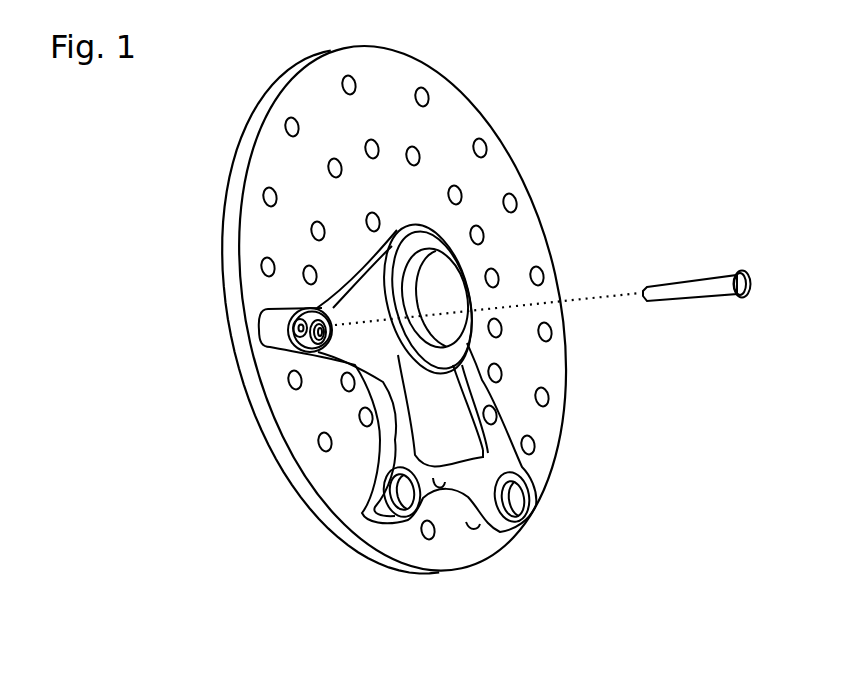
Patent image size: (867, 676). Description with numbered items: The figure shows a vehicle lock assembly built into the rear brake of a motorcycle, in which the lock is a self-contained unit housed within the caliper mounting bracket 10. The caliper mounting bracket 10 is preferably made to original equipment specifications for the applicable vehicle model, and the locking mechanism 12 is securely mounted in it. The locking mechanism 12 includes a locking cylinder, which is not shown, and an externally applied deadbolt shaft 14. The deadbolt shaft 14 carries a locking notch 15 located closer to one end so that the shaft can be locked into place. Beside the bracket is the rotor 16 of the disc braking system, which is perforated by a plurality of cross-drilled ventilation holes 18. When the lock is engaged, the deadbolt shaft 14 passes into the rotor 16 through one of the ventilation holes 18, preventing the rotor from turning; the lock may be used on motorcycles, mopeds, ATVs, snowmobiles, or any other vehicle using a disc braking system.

The caliper mounting bracket 10 is at (456, 447).
The locking mechanism 12 is at (303, 341).
The deadbolt shaft 14 is at (687, 290).
The locking notch 15 is at (728, 280).
The rotor 16 is at (395, 124).
The cross-drilled ventilation holes 18 is at (268, 197).